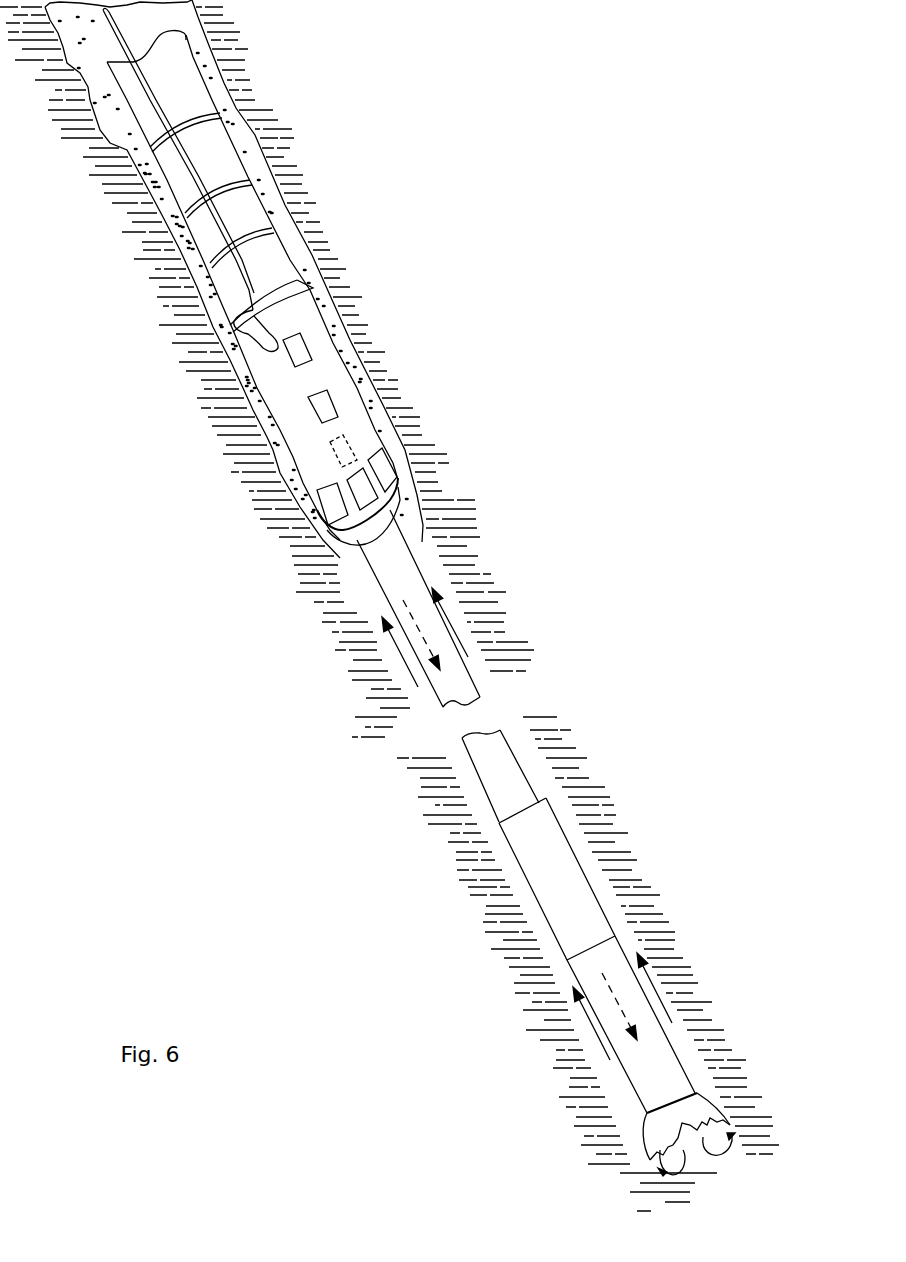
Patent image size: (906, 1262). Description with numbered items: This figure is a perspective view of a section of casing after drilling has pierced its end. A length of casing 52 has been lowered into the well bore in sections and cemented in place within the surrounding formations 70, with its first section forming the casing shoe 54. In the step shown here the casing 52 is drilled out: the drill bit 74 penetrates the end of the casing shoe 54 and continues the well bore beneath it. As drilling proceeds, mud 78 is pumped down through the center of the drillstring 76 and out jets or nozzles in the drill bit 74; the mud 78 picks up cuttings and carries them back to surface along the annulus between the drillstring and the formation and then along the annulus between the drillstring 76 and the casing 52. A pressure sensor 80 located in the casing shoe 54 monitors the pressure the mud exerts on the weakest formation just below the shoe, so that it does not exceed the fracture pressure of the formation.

The casing 52 is at (207, 148).
The casing shoe 54 is at (350, 413).
The pressure sensor 80 is at (338, 450).
The formations 70 is at (592, 822).
The drillstring 76 is at (508, 765).
The mud 78 is at (623, 1017).
The drill bit 74 is at (698, 1110).